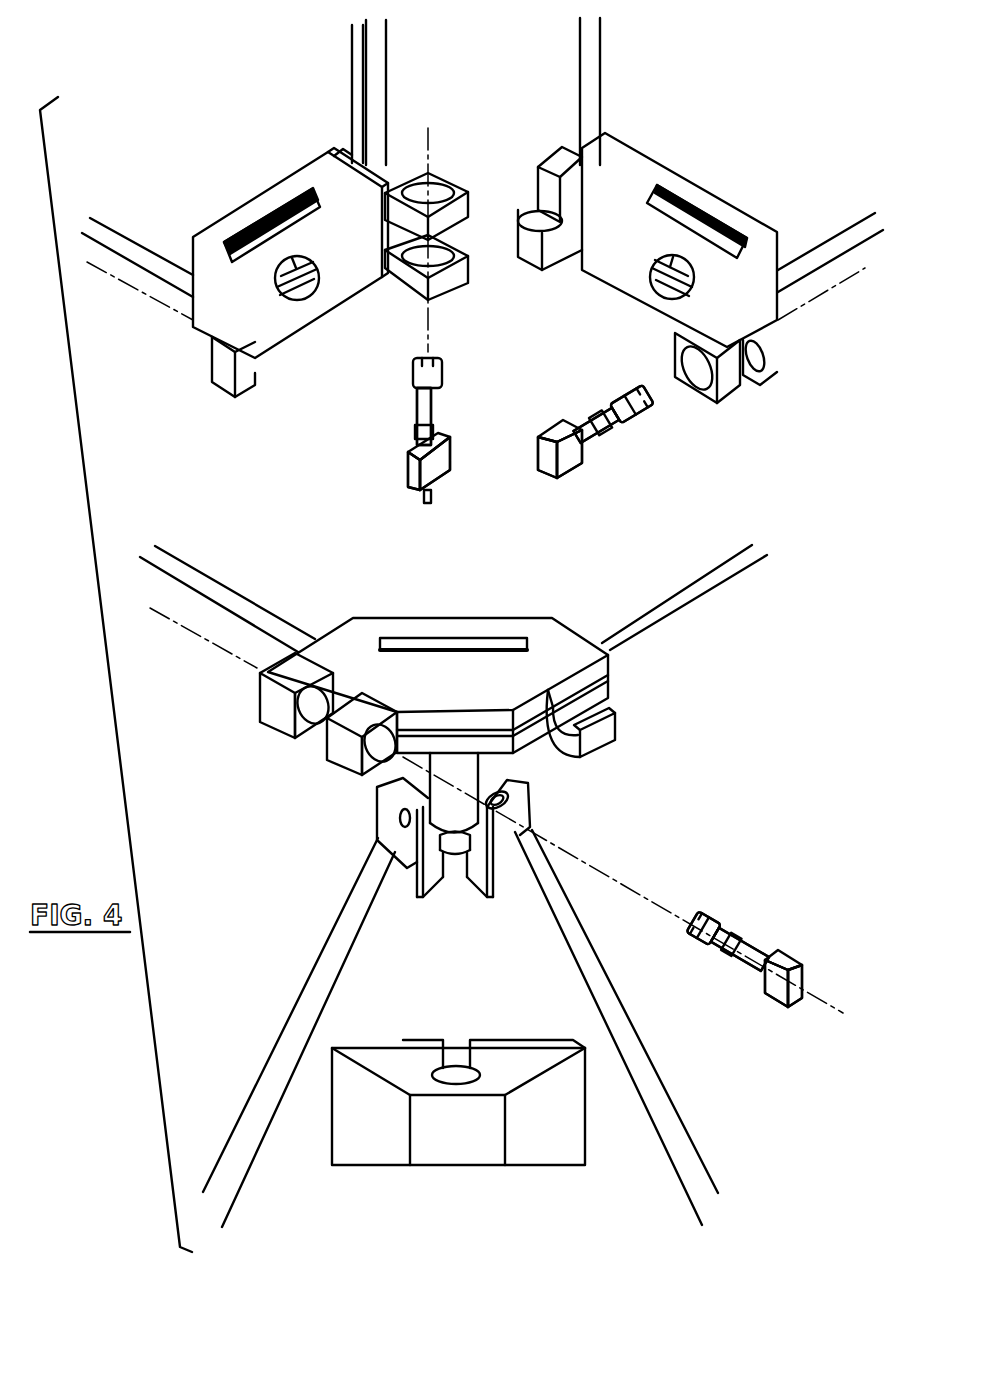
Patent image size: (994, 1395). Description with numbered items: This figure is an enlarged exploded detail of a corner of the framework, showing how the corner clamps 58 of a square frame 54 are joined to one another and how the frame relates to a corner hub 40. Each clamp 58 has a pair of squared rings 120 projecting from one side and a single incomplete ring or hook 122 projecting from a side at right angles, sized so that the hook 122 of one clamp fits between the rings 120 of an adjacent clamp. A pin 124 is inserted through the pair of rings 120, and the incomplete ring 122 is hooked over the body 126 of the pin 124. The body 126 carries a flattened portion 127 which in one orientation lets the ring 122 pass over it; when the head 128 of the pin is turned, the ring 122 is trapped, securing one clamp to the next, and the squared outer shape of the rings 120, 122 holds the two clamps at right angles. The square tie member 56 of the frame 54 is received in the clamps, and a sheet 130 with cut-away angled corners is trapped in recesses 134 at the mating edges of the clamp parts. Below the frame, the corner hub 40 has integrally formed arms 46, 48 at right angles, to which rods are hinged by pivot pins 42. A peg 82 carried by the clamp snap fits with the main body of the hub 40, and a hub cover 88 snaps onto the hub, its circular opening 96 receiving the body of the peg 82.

The corner hub 40 is at (388, 845).
The pivot pin 42 is at (400, 820).
The arm 46 is at (510, 880).
The arm 48 is at (390, 801).
The square frame 54 is at (128, 285).
The square tie member 56 is at (375, 60).
The corner clamp 58 is at (237, 200).
The peg 82 is at (495, 785).
The hub cover 88 is at (460, 1133).
The circular opening 96 is at (462, 1070).
The squared ring 120 is at (463, 212).
The incomplete ring 122 is at (228, 372).
The pin 124 is at (413, 413).
The pin body 126 is at (433, 412).
The flattened portion 127 is at (607, 397).
The pin head 128 is at (438, 470).
The sheet 130 is at (355, 38).
The recess 134 is at (347, 153).